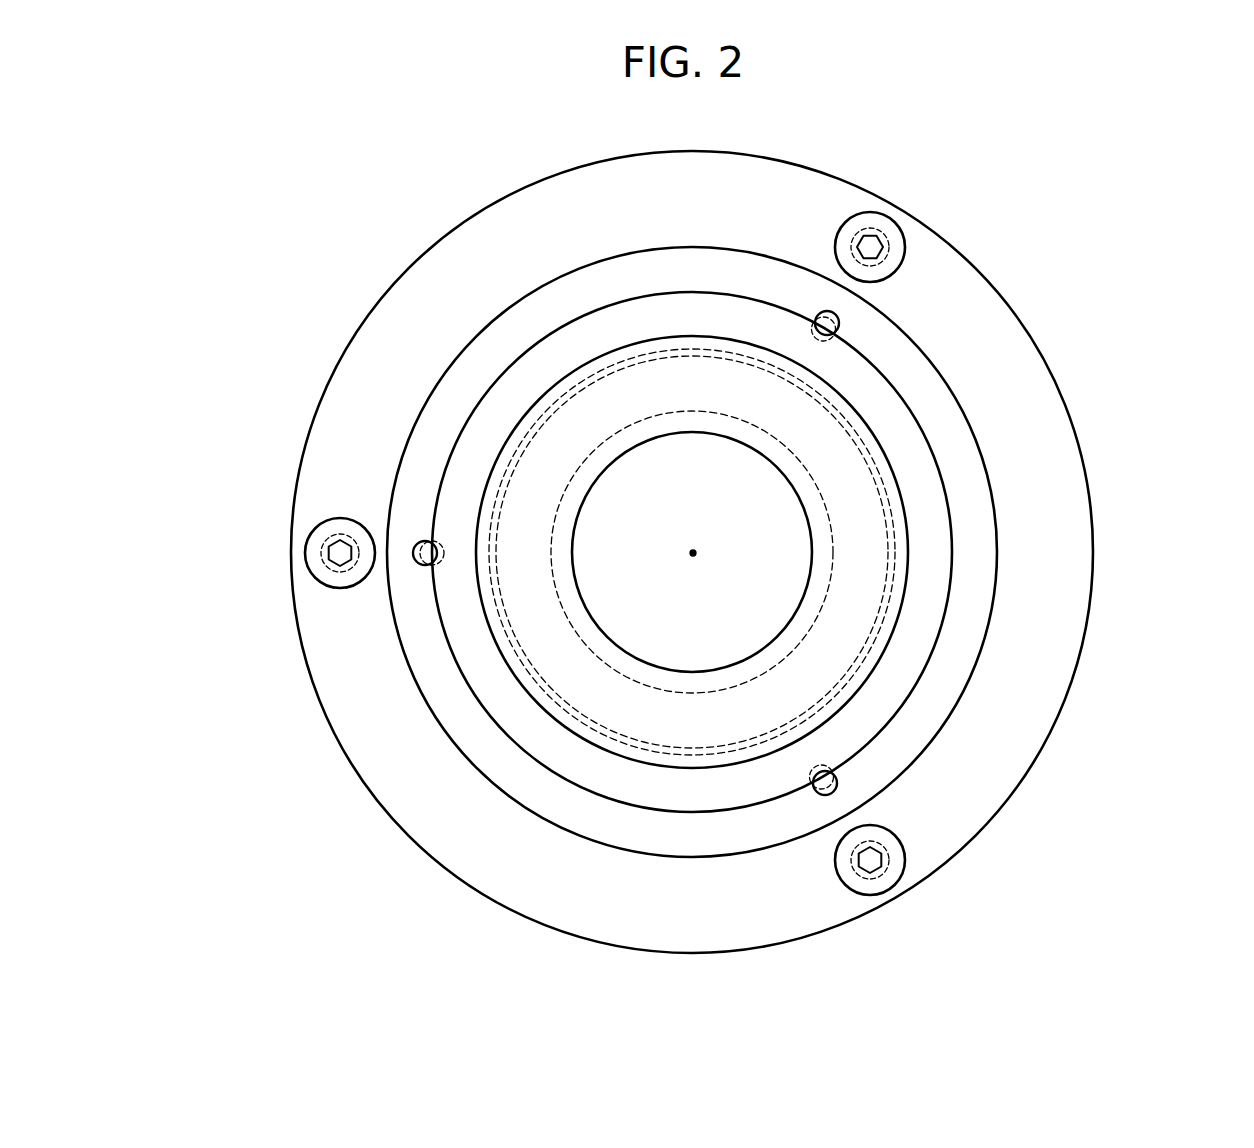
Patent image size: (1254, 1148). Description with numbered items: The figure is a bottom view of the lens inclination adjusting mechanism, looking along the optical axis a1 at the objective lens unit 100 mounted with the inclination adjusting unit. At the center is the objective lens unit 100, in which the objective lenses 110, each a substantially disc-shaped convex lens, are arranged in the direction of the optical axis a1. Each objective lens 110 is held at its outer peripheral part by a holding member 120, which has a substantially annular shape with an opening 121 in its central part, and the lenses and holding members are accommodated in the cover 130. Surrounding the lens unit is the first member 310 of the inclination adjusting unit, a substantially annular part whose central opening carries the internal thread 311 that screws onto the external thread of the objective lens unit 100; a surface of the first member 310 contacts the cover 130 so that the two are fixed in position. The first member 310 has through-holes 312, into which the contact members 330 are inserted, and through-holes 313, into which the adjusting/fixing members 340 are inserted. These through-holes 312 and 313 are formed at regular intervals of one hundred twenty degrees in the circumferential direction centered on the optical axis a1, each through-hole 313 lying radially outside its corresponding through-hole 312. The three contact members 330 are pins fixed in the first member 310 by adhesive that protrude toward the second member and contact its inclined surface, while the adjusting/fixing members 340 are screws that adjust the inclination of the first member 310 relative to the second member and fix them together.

The objective lens unit 100 is at (838, 552).
The objective lens 110 is at (830, 503).
The holding member 120 is at (910, 540).
The opening 121 is at (798, 604).
The cover 130 is at (952, 590).
The first member 310 is at (375, 350).
The internal thread 311 is at (520, 455).
The through-hole 312 is at (412, 548).
The through-hole 313 is at (326, 542).
The contact member 330 is at (413, 562).
The adjusting/fixing member 340 is at (305, 556).
The optical axis a1 is at (695, 552).